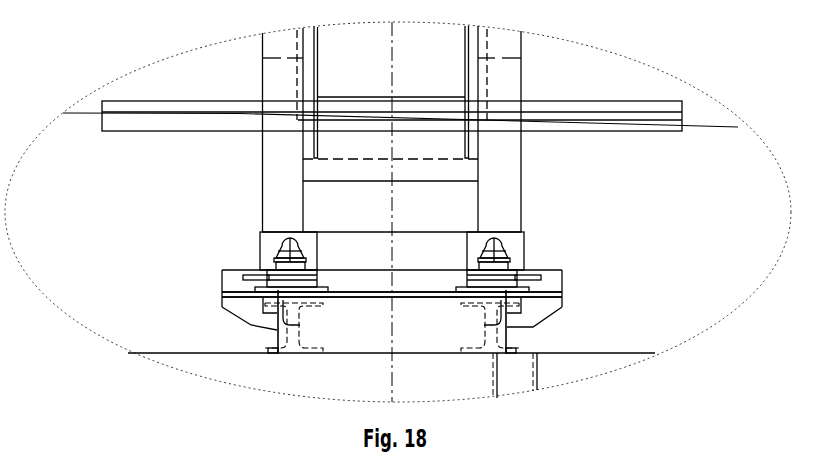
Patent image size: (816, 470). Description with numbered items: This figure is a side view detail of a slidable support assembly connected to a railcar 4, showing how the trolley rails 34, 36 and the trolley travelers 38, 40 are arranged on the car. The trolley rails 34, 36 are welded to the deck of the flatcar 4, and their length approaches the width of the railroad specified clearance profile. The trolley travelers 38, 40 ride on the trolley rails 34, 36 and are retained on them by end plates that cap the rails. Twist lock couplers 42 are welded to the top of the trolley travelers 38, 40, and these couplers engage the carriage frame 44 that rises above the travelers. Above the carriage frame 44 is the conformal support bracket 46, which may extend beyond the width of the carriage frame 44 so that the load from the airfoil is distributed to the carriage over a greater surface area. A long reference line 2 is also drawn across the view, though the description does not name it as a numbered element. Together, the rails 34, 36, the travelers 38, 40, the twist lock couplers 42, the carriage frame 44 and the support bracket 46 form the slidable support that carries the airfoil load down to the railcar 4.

The mast / tower structure line 2 is at (738, 127).
The railcar 4 is at (162, 353).
The trolley rail 34 is at (277, 343).
The trolley rail 36 is at (507, 342).
The trolley traveler 38 is at (563, 285).
The trolley traveler 40 is at (392, 294).
The twist lock coupler 42 is at (268, 252).
The carriage frame 44 is at (262, 150).
The conformal support bracket 46 is at (138, 132).